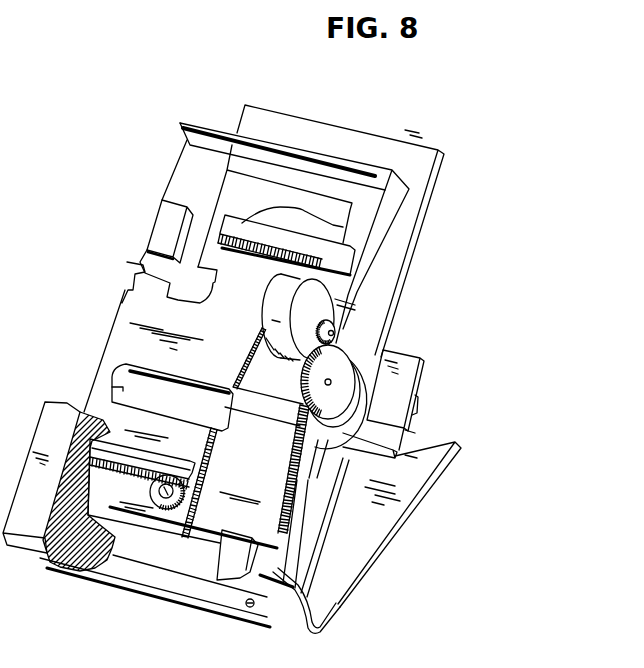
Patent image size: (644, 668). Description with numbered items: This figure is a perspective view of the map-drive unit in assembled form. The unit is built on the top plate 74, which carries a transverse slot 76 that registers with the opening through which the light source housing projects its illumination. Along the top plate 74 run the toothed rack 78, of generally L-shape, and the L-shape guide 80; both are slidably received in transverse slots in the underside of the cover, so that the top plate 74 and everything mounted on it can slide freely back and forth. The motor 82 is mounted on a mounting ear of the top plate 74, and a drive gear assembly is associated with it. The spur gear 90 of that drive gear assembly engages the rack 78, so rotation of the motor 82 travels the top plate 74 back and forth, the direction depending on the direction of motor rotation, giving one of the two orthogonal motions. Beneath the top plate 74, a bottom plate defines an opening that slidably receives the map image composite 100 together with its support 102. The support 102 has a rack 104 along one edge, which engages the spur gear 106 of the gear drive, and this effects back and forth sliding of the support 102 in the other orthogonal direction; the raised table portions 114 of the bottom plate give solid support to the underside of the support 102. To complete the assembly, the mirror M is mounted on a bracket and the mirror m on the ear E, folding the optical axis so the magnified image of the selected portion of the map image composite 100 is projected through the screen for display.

The mirror M is at (432, 180).
The mirror m is at (400, 357).
The ear E is at (410, 413).
The top plate 74 is at (125, 305).
The transverse slot 76 is at (112, 380).
The toothed rack 78 is at (65, 483).
The L-shape guide 80 is at (333, 252).
The motor 82 is at (265, 297).
The spur gear 90 is at (163, 505).
The map image composite 100 is at (226, 410).
The support 102 is at (228, 532).
The rack 104 is at (300, 492).
The spur gear 106 is at (302, 396).
The raised table portions 114 is at (230, 193).